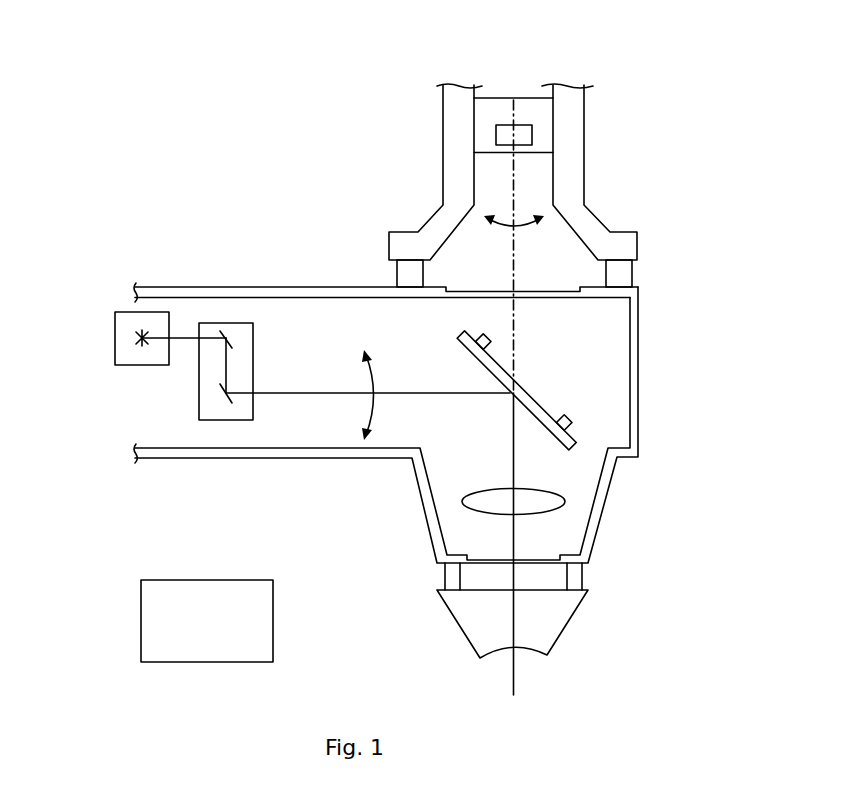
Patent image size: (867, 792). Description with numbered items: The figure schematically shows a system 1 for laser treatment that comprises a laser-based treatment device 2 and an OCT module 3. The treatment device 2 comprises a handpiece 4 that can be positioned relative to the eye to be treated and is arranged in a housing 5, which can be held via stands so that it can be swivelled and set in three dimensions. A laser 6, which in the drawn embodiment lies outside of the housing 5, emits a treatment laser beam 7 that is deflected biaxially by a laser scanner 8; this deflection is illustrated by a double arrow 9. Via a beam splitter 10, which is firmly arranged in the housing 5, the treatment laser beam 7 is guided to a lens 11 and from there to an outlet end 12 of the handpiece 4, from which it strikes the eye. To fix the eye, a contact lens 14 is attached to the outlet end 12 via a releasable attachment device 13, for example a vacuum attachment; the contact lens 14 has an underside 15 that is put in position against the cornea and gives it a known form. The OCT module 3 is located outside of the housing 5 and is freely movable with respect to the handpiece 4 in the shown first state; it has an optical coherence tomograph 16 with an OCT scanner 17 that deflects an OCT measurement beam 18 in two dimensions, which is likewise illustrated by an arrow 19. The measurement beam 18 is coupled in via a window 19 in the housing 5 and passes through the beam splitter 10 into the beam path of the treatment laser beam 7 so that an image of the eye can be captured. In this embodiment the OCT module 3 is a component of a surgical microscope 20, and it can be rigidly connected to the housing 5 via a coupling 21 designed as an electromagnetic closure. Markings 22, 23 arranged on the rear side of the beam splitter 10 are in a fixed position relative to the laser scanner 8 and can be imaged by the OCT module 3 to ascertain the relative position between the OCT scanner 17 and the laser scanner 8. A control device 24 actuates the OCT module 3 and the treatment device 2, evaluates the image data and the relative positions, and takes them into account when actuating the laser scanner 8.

The system 1 is at (225, 139).
The laser-based treatment device 2 is at (256, 487).
The OCT module 3 is at (632, 73).
The handpiece 4 is at (635, 405).
The housing 5 is at (175, 292).
The laser 6 is at (117, 362).
The treatment laser beam 7 is at (185, 338).
The laser scanner 8 is at (243, 348).
The double arrow 9 is at (376, 365).
The beam splitter 10 is at (523, 390).
The lens 11 is at (560, 497).
The outlet end 12 is at (533, 558).
The releasable attachment device 13 is at (573, 580).
The contact lens 14 is at (467, 622).
The underside 15 is at (527, 655).
The optical coherence tomograph 16 is at (480, 115).
The OCT scanner 17 is at (513, 136).
The OCT measurement beam 18 is at (523, 260).
The window 19 is at (523, 220).
The surgical microscope 20 is at (515, 83).
The coupling 21 is at (393, 275).
The marking 22 is at (495, 338).
The marking 23 is at (572, 418).
The control device 24 is at (196, 652).